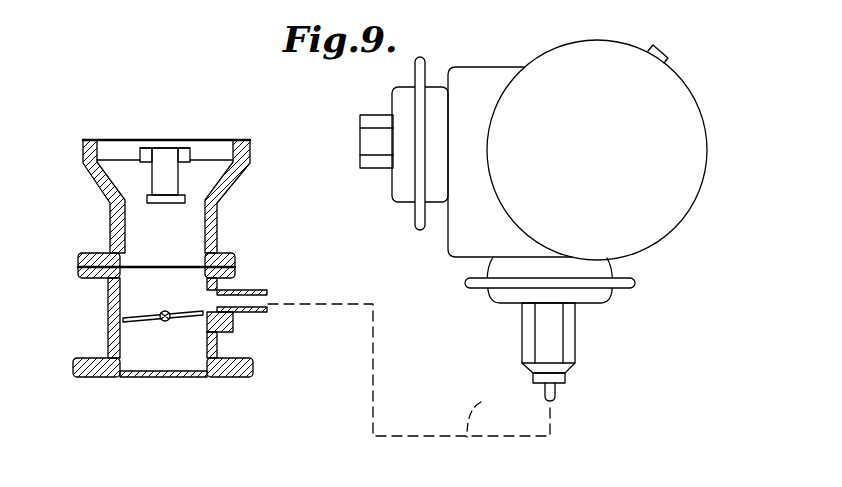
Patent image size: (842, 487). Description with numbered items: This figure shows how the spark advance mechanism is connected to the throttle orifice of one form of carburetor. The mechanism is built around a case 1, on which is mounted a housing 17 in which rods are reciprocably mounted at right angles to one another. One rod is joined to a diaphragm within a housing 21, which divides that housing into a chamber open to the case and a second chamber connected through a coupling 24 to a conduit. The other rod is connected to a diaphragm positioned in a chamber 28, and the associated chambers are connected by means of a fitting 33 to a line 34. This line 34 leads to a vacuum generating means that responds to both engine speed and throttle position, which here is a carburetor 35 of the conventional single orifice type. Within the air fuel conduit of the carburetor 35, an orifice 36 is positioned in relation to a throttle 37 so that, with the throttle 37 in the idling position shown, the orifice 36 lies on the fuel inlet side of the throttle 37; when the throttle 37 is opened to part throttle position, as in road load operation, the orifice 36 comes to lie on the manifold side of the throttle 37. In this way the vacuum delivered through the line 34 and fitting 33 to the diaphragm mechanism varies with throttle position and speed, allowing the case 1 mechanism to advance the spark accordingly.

The case 1 is at (493, 120).
The housing 17 is at (497, 67).
The housing 21 is at (415, 68).
The coupling 24 is at (365, 116).
The chamber 28 is at (466, 281).
The fitting 33 is at (522, 337).
The line 34 is at (547, 394).
The carburetor 35 is at (109, 337).
The orifice 36 is at (208, 331).
The throttle 37 is at (170, 312).